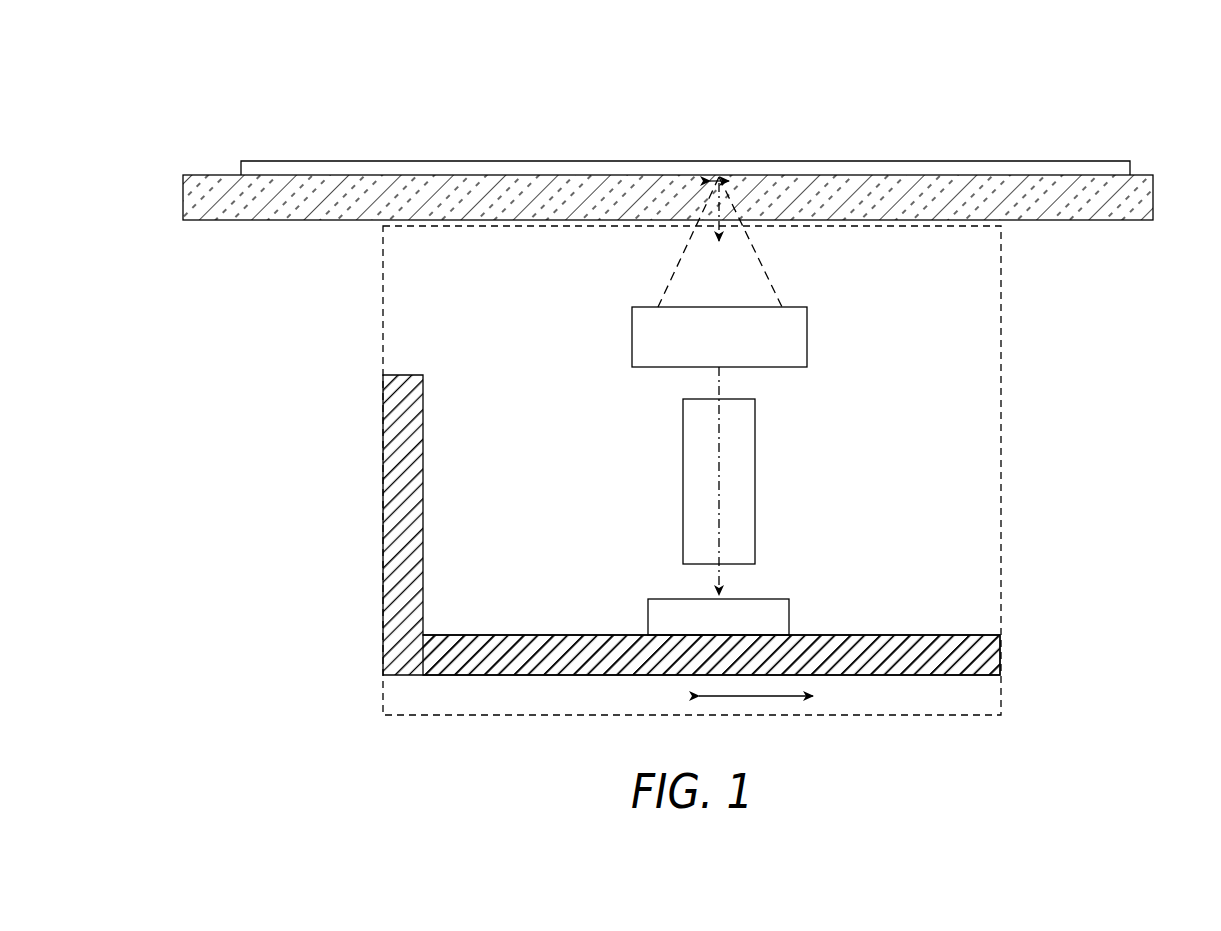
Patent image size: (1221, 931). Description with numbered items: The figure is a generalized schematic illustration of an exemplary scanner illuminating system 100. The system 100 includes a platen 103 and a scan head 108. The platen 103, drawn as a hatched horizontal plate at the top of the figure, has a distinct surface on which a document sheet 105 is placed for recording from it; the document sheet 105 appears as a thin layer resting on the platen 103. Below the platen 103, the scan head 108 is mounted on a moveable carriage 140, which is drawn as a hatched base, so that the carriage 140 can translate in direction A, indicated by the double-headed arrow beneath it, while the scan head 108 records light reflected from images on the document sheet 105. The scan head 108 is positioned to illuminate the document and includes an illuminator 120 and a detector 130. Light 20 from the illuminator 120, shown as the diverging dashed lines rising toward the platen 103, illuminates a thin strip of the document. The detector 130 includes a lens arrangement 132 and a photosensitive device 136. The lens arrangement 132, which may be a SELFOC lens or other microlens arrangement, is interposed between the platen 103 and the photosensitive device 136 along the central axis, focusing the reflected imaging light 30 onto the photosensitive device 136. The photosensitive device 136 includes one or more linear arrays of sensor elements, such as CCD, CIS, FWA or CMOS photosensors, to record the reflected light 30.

The scanner illuminating system 100 is at (772, 106).
The platen 103 is at (1155, 192).
The document sheet 105 is at (843, 167).
The scan head 108 is at (350, 548).
The moveable carriage 140 is at (473, 657).
The light 20 is at (672, 268).
The reflected light 30 is at (722, 293).
The illuminator 120 is at (704, 347).
The detector 130 is at (782, 538).
The lens arrangement 132 is at (683, 483).
The photosensitive device 136 is at (648, 617).
The direction of carriage translation A is at (753, 698).